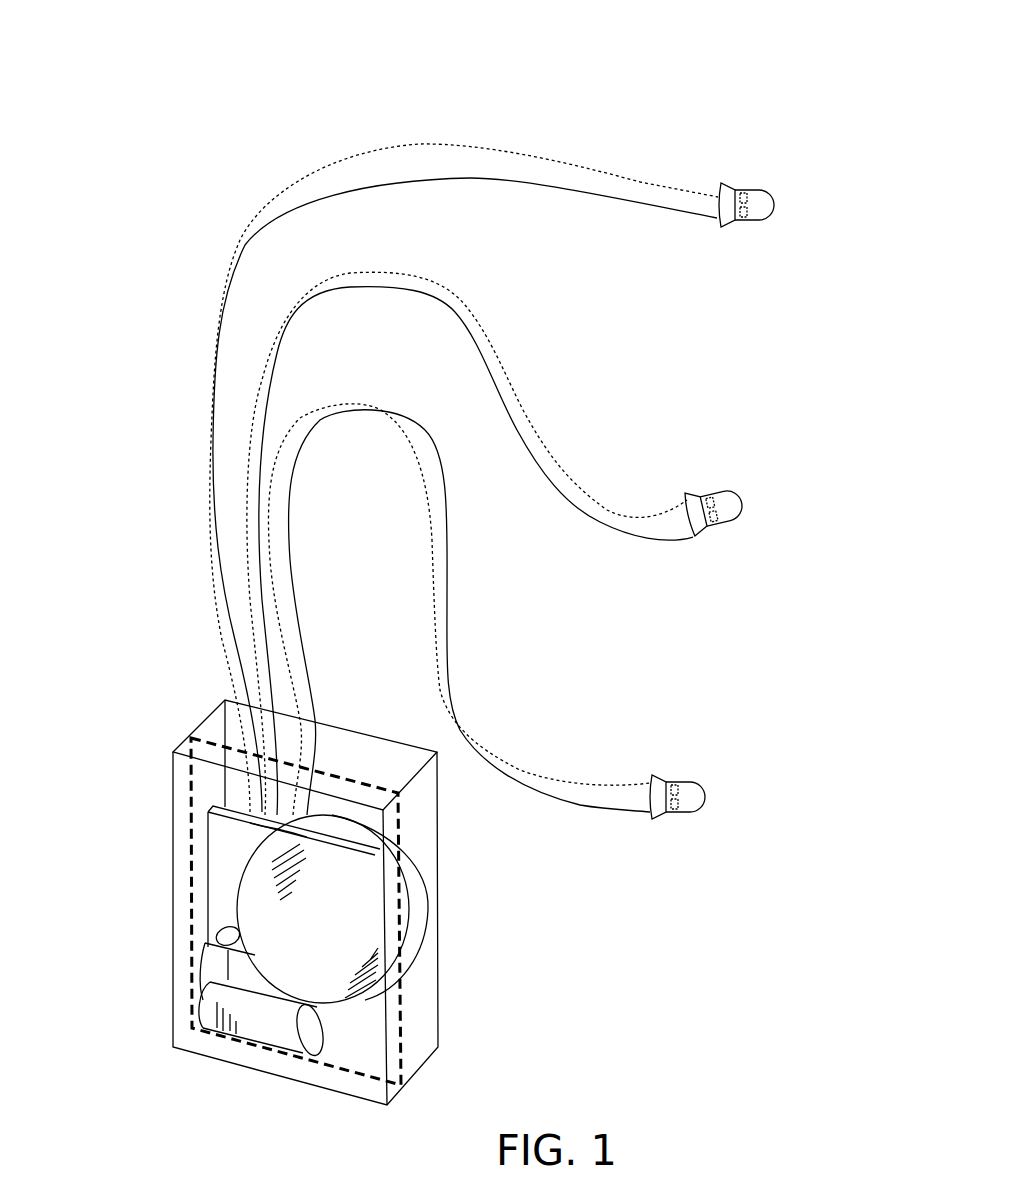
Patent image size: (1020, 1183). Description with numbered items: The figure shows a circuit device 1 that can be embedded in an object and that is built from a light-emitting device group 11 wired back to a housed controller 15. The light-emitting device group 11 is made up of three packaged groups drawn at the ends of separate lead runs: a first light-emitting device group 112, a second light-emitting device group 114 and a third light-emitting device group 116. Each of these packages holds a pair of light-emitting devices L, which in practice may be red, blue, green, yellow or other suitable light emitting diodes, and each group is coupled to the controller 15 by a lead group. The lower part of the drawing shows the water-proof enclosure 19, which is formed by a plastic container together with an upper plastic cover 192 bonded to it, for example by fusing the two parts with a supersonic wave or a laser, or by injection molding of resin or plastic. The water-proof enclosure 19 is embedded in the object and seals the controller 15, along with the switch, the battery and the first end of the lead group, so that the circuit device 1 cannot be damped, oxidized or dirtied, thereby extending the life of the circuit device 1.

The circuit device 1 is at (490, 566).
The light-emitting device group 11 is at (488, 500).
The first light-emitting device group 112 is at (482, 203).
The second light-emitting device group 114 is at (730, 495).
The third light-emitting device group 116 is at (730, 800).
The controller 15 is at (220, 897).
The water-proof enclosure 19 is at (425, 852).
The upper plastic cover 192 is at (178, 852).
The light-emitting device L is at (743, 205).